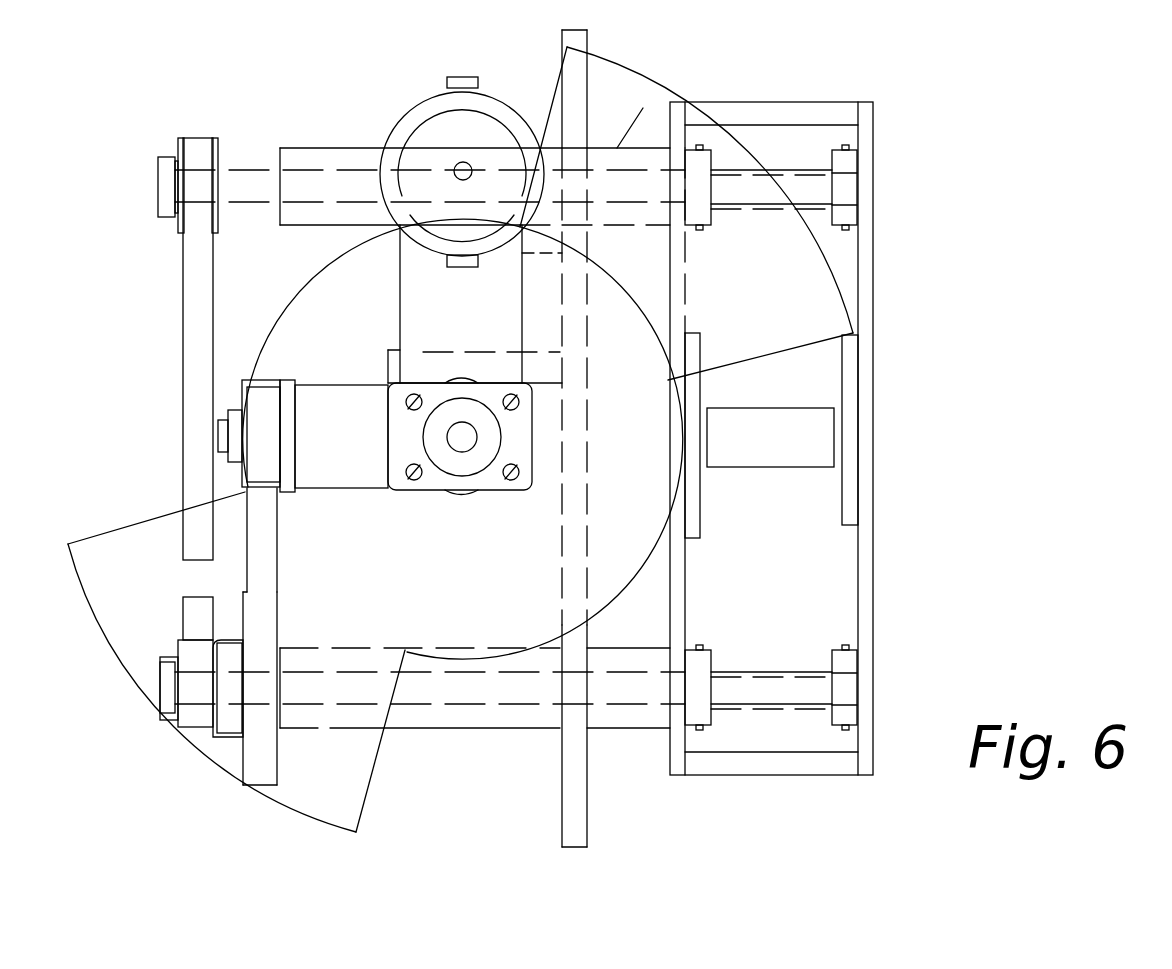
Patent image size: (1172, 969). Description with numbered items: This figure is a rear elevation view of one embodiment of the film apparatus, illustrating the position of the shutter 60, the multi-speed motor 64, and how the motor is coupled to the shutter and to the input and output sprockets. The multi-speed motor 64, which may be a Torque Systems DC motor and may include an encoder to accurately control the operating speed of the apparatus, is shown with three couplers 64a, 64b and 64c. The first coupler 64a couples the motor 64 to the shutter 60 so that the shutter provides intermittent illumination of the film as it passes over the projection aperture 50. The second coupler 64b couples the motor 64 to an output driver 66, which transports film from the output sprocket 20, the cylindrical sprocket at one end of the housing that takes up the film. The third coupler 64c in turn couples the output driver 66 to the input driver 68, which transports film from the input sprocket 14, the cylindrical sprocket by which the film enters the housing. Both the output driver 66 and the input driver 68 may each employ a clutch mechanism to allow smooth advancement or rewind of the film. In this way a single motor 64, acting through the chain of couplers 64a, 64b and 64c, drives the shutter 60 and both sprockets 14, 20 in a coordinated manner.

The input sprocket 14 is at (843, 150).
The output sprocket 20 is at (845, 730).
The projection aperture 50 is at (787, 467).
The shutter 60 is at (822, 261).
The multi-speed motor 64 is at (413, 102).
The first coupler 64a is at (400, 282).
The second coupler 64b is at (277, 535).
The third coupler 64c is at (183, 362).
The output driver 66 is at (608, 728).
The input driver 68 is at (663, 78).